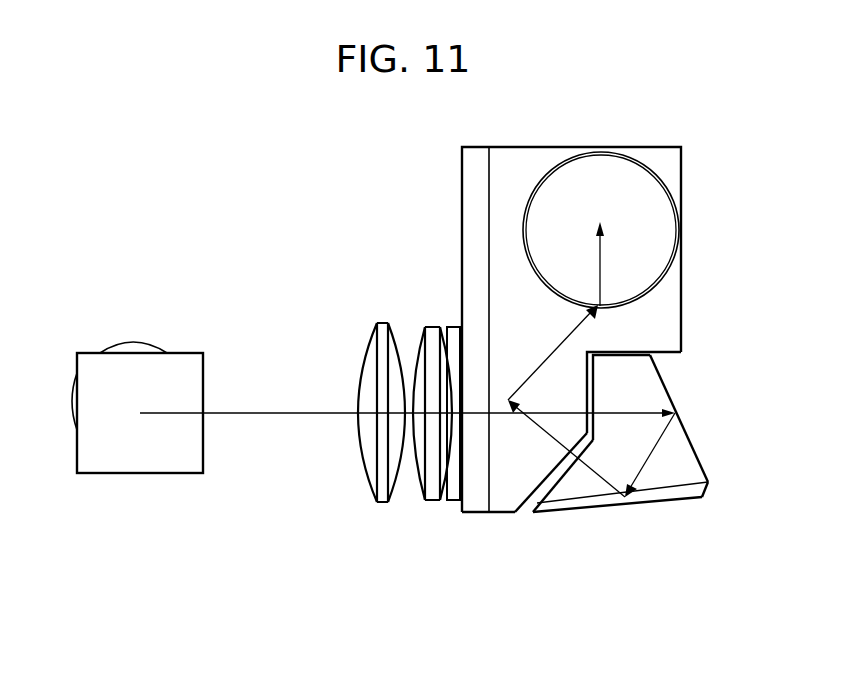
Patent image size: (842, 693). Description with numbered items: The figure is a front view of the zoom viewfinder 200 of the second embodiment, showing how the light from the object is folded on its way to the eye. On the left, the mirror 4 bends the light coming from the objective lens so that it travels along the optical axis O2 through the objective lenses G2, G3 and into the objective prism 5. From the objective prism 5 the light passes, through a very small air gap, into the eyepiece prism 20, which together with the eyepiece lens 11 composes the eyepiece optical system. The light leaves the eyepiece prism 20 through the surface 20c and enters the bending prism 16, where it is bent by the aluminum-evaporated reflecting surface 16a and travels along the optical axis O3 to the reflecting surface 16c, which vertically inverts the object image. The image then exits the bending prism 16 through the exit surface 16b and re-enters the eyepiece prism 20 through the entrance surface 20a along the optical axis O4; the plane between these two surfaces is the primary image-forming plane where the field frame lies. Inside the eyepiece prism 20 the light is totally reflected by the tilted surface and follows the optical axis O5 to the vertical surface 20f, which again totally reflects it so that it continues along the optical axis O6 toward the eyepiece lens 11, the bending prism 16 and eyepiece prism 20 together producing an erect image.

The viewfinder 200 is at (163, 202).
The mirror 4 is at (90, 450).
The objective lens G2 is at (382, 497).
The objective lens G3 is at (435, 497).
The objective prism 5 is at (453, 330).
The eyepiece prism 20 is at (665, 302).
The entrance surface 20a is at (535, 490).
The surface 20c is at (590, 370).
The vertical surface 20f is at (500, 195).
The eyepiece lens 11 is at (665, 222).
The bending prism 16 is at (688, 467).
The reflecting surface 16a is at (683, 425).
The exit surface 16b is at (533, 503).
The reflecting surface 16c is at (650, 495).
The optical axis O2 is at (238, 415).
The optical axis O3 is at (660, 450).
The optical axis O4 is at (583, 475).
The optical axis O5 is at (553, 350).
The optical axis O6 is at (600, 250).